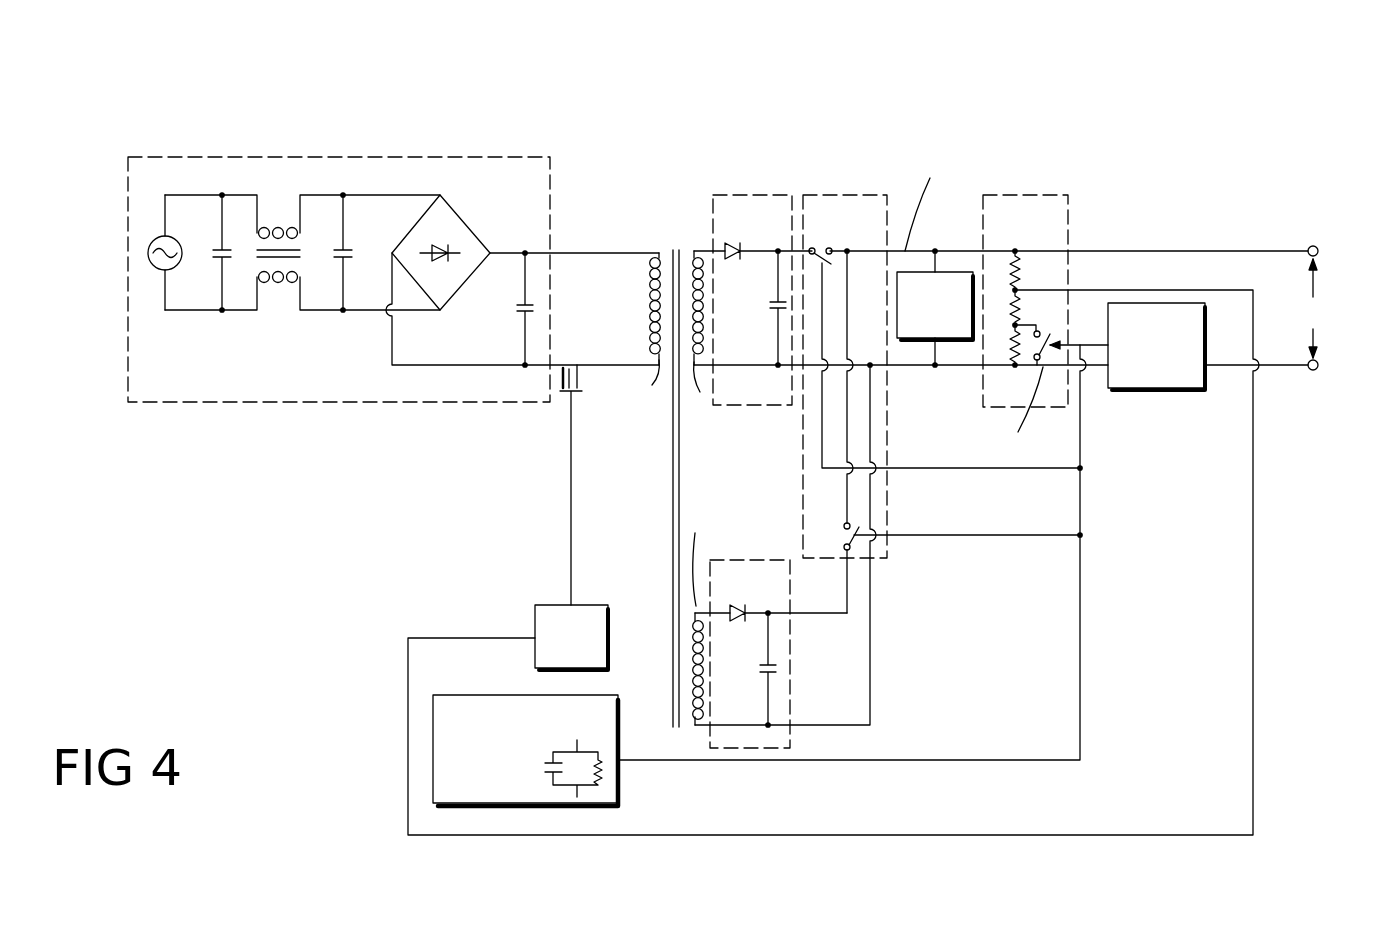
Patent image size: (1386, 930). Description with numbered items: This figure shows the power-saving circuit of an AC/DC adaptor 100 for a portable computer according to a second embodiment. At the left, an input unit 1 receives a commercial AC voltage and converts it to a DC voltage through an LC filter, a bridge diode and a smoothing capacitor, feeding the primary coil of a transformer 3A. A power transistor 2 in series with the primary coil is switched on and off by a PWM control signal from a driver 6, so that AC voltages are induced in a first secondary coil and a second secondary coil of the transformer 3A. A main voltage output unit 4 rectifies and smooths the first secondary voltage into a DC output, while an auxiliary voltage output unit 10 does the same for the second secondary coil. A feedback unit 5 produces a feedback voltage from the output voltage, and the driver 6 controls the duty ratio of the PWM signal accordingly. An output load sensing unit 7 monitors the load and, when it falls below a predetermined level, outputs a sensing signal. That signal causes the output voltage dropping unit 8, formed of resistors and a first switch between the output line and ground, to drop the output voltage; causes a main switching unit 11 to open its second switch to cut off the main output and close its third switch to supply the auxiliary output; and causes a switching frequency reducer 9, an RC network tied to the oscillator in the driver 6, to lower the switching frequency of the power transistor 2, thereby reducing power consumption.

The AC/DC adaptor 100 is at (709, 114).
The input unit 1 is at (402, 158).
The power transistor 2 is at (588, 391).
The transformer 3A is at (680, 250).
The main voltage output unit 4 is at (768, 195).
The feedback unit 5 is at (950, 272).
The driver 6 is at (612, 622).
The output load sensing unit 7 is at (1146, 390).
The output voltage dropping unit 8 is at (1030, 195).
The switching frequency reducer 9 is at (625, 740).
The auxiliary voltage output unit 10 is at (755, 560).
The main switching unit 11 is at (845, 195).